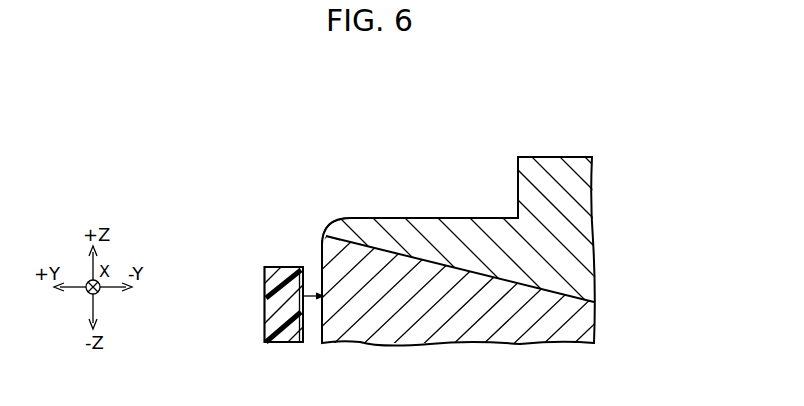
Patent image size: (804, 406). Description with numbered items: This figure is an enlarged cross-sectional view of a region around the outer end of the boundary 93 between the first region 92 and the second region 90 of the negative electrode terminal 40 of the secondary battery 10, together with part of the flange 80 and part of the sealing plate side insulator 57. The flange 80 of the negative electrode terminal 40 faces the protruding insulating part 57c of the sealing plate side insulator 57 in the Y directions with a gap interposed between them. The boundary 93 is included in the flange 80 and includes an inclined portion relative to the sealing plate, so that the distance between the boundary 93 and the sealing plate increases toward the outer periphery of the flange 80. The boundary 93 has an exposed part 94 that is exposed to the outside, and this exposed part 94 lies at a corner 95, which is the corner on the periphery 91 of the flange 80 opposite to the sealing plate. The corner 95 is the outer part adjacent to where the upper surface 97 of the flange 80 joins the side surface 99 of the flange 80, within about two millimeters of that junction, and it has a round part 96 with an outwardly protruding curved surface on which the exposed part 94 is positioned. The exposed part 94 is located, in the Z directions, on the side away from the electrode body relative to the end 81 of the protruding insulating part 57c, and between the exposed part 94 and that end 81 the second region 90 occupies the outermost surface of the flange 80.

The vehicle component assembly 10 is at (511, 114).
The negative electrode terminal 40 is at (447, 217).
The sealing plate side insulator 57 is at (264, 300).
The protruding insulating part 57c is at (273, 327).
The flange 80 is at (265, 278).
The end of the protruding insulating part 81 is at (283, 267).
The second region 90 is at (492, 340).
The periphery of the flange 91 is at (293, 343).
The first region 92 is at (492, 217).
The boundary 93 is at (560, 276).
The exposed part 94 is at (329, 234).
The corner 95 is at (323, 240).
The round part 96 is at (329, 234).
The upper surface of the flange 97 is at (385, 217).
The side surface of the flange 99 is at (310, 334).